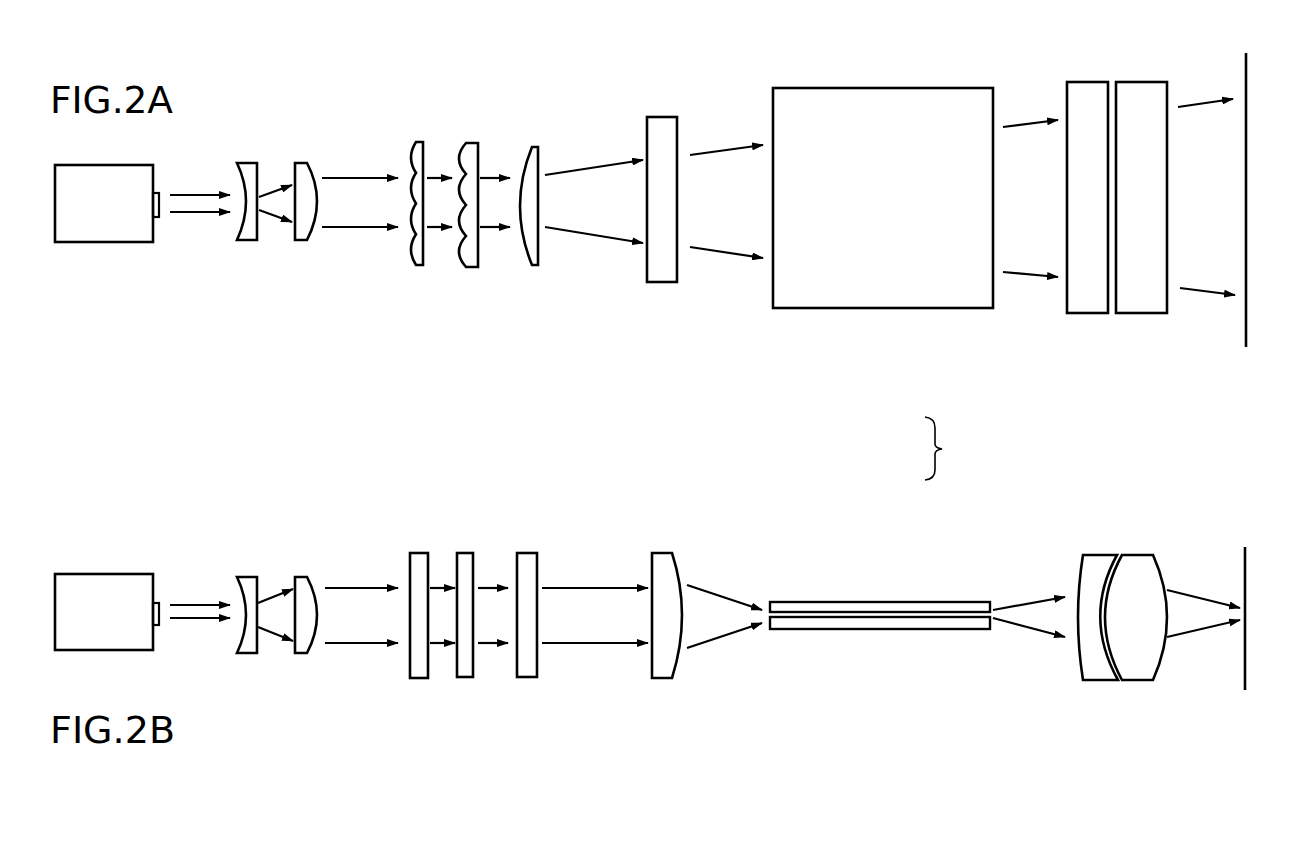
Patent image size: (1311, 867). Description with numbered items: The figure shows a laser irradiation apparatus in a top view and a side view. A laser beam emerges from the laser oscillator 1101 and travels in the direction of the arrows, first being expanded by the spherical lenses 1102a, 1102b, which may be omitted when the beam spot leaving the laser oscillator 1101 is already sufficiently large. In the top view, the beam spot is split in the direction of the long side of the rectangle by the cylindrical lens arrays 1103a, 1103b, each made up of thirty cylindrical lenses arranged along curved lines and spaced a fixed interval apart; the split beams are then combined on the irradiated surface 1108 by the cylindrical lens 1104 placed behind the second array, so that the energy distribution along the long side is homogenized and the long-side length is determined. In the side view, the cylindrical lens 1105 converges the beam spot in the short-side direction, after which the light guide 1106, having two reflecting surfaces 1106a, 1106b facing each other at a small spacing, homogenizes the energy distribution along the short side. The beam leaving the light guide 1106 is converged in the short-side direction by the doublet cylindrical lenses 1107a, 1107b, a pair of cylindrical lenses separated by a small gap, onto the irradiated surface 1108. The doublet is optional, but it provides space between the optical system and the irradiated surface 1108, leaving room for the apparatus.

In FIG. 2A, the laser oscillator 1101 is at (108, 210).
In FIG. 2B, the laser oscillator 1101 is at (133, 600).
In FIG. 2A, the spherical lens 1102a is at (242, 233).
In FIG. 2B, the spherical lens 1102a is at (250, 580).
In FIG. 2A, the spherical lens 1102b is at (303, 233).
In FIG. 2B, the spherical lens 1102b is at (307, 580).
In FIG. 2A, the cylindrical lens array 1103a is at (419, 266).
In FIG. 2B, the cylindrical lens array 1103a is at (417, 560).
In FIG. 2A, the cylindrical lens array 1103b is at (470, 267).
In FIG. 2B, the cylindrical lens array 1103b is at (465, 573).
In FIG. 2A, the cylindrical lens 1104 is at (532, 257).
In FIG. 2B, the cylindrical lens 1104 is at (528, 563).
In FIG. 2A, the cylindrical lens 1105 is at (660, 270).
In FIG. 2B, the cylindrical lens 1105 is at (665, 563).
In FIG. 2A, the light guide 1106 is at (948, 300).
In FIG. 2B, the reflecting surface 1106a is at (780, 627).
In FIG. 2B, the reflecting surface 1106b is at (882, 610).
In FIG. 2A, the doublet cylindrical lens 1107a is at (1093, 294).
In FIG. 2B, the doublet cylindrical lens 1107a is at (1093, 577).
In FIG. 2A, the doublet cylindrical lens 1107b is at (1142, 293).
In FIG. 2B, the doublet cylindrical lens 1107b is at (1152, 573).
In FIG. 2A, the irradiated surface 1108 is at (1246, 347).
In FIG. 2B, the irradiated surface 1108 is at (1247, 563).